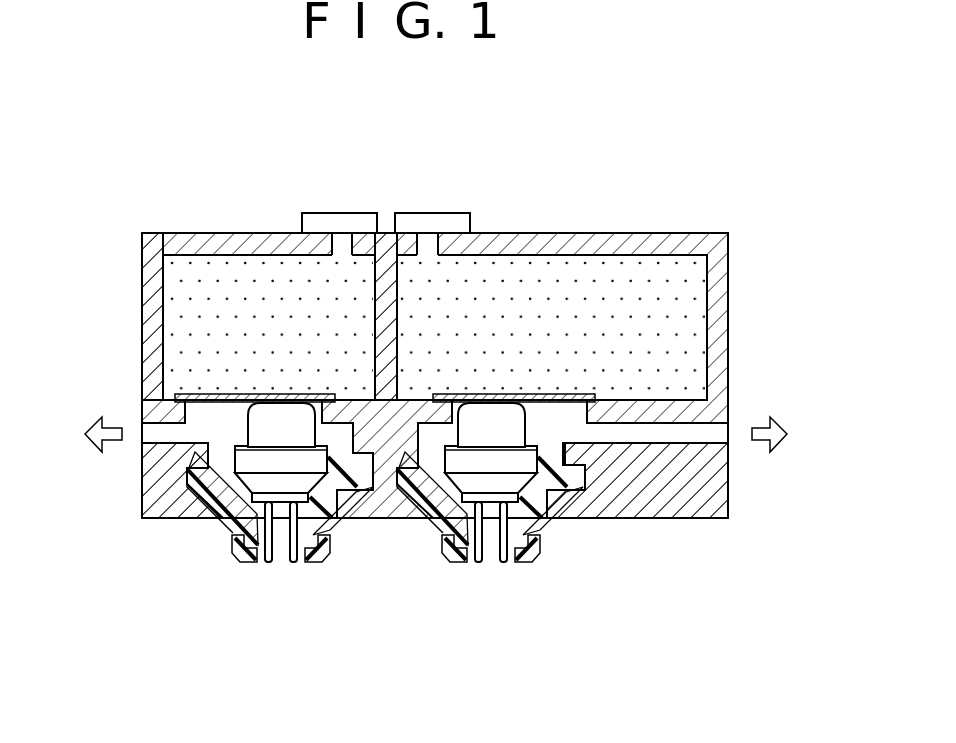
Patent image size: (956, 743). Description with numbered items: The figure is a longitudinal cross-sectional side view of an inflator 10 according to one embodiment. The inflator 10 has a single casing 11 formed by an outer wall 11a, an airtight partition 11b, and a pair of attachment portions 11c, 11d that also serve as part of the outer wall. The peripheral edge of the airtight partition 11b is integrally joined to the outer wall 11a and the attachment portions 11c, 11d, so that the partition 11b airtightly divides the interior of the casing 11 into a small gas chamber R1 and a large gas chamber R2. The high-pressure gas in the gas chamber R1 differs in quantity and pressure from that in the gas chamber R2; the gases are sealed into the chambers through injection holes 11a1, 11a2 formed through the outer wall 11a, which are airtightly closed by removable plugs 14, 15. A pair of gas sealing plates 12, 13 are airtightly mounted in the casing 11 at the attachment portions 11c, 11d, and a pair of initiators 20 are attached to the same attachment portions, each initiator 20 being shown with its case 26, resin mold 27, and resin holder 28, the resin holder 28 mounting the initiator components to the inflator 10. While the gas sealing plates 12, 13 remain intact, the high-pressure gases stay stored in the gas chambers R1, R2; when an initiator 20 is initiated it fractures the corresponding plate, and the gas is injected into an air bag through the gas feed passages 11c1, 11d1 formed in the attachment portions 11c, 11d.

The inflator 10 is at (714, 210).
The casing 11 is at (545, 235).
The outer wall 11a is at (150, 306).
The injection hole 11a1 is at (352, 245).
The injection hole 11a2 is at (437, 245).
The airtight partition 11b is at (385, 316).
The attachment portion 11c is at (153, 500).
The gas feed passage 11c1 is at (150, 435).
The attachment portion 11d is at (703, 498).
The gas feed passage 11d1 is at (703, 435).
The gas sealing plate 12 is at (200, 388).
The gas sealing plate 13 is at (590, 395).
The plug 14 is at (300, 226).
The plug 15 is at (470, 227).
The initiator 20 is at (209, 530).
The case 26 is at (282, 413).
The resin mold 27 is at (243, 527).
The resin holder 28 is at (330, 550).
The gas chamber R1 is at (207, 275).
The gas chamber R2 is at (683, 302).